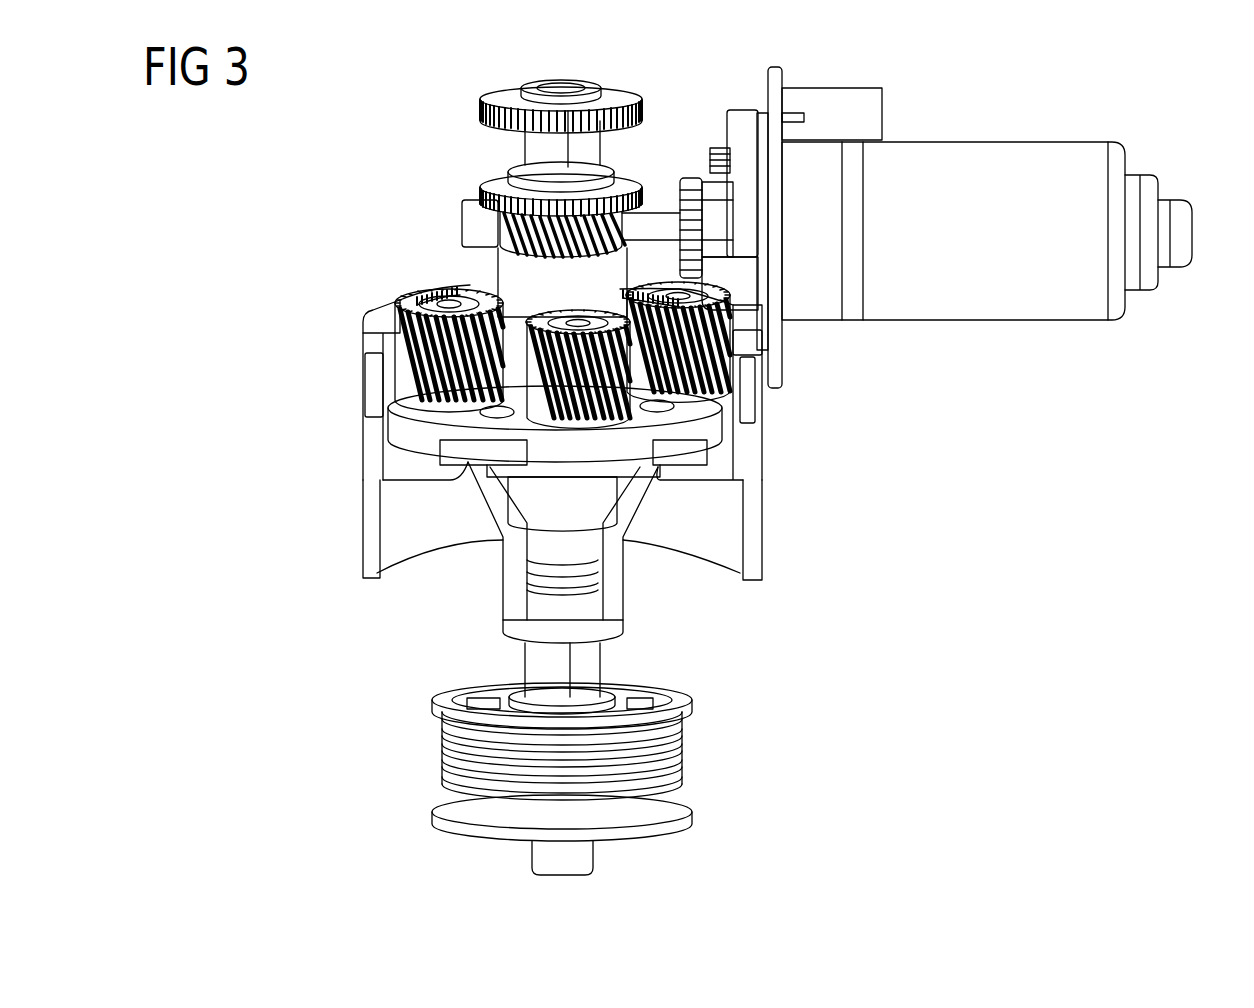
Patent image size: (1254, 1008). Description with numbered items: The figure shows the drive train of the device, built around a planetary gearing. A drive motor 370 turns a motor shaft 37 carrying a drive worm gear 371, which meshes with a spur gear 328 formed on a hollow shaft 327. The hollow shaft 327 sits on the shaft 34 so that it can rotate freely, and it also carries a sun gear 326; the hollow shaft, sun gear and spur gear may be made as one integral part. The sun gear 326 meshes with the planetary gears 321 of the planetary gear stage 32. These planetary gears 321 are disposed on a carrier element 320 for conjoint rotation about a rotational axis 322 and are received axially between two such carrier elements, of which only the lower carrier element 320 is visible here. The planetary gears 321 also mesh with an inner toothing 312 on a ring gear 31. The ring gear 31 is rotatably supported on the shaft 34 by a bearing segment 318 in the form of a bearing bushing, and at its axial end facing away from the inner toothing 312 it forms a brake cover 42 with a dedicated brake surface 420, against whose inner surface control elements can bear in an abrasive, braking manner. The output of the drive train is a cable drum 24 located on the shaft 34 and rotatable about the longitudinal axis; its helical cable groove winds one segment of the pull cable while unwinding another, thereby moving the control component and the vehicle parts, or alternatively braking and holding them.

The cable drum 24 is at (657, 822).
The ring gear 31 is at (380, 477).
The planetary gear stage 32 is at (320, 311).
The shaft 34 is at (587, 157).
The motor shaft 37 is at (668, 228).
The brake cover 42 is at (412, 558).
The inner toothing 312 is at (403, 285).
The bearing segment 318 is at (508, 585).
The carrier element 320 is at (425, 423).
The planetary gears 321 is at (732, 405).
The rotational axis 322 is at (578, 316).
The sun gear 326 is at (403, 365).
The hollow shaft 327 is at (515, 275).
The spur gear 328 is at (483, 175).
The drive motor 370 is at (970, 162).
The drive worm gear 371 is at (640, 181).
The brake surface 420 is at (715, 570).